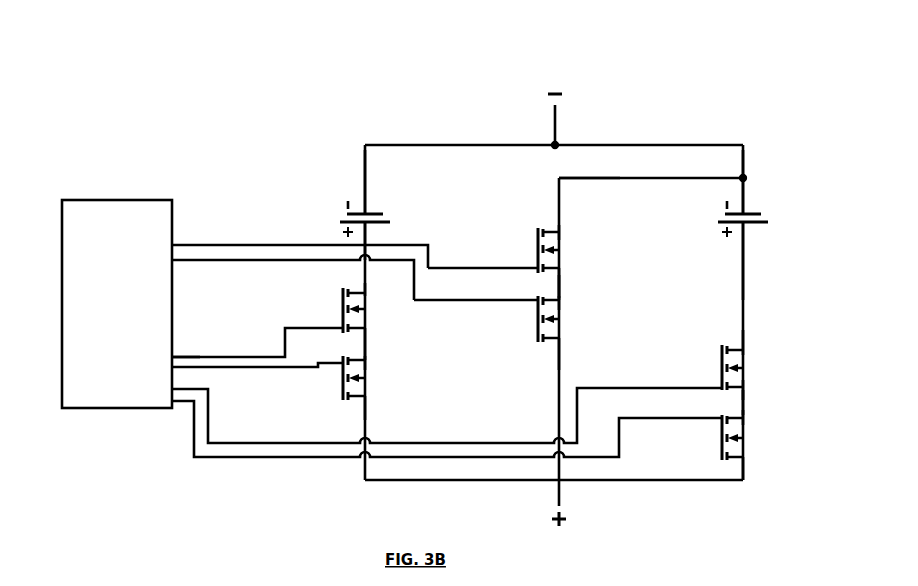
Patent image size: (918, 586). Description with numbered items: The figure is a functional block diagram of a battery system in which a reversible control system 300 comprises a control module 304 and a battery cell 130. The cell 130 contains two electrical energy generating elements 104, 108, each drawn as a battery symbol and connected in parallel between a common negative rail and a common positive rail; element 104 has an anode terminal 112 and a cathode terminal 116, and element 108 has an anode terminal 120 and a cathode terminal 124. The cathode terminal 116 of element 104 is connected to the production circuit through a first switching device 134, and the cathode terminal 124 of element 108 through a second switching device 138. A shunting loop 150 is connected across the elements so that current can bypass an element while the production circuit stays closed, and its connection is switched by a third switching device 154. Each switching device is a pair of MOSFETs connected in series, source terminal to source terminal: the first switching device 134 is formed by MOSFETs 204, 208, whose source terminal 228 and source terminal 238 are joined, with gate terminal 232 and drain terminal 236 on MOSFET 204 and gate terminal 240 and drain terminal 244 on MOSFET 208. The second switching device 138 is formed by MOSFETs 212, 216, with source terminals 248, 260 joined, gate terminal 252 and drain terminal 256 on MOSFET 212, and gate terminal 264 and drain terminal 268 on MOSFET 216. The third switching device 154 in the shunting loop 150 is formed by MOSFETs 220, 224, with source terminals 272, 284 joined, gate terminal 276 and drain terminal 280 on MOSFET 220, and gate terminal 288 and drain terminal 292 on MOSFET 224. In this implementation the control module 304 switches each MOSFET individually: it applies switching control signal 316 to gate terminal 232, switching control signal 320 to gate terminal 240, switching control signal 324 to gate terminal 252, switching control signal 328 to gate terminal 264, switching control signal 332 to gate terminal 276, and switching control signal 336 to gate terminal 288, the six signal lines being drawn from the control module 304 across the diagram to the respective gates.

The reversible control system 300 is at (128, 73).
The control module 304 is at (113, 200).
The cell 130 is at (310, 125).
The electrical energy generating element 104 is at (316, 216).
The electrical energy generating element 108 is at (790, 216).
The anode terminal 112 is at (362, 192).
The cathode terminal 116 is at (358, 237).
The anode terminal 120 is at (745, 196).
The cathode terminal 124 is at (745, 243).
The first switching device 134 is at (248, 357).
The second switching device 138 is at (800, 401).
The shunting loop 150 is at (592, 179).
The third switching device 154 is at (584, 285).
The MOSFET 204 is at (342, 311).
The MOSFET 208 is at (334, 398).
The MOSFET 212 is at (723, 354).
The MOSFET 216 is at (721, 470).
The MOSFET 220 is at (544, 238).
The MOSFET 224 is at (527, 322).
The source terminal 228 is at (368, 333).
The gate terminal 232 is at (328, 328).
The drain terminal 236 is at (368, 288).
The source terminal 238 is at (368, 360).
The gate terminal 240 is at (330, 366).
The drain terminal 244 is at (368, 408).
The source terminal 248 is at (746, 388).
The gate terminal 252 is at (720, 387).
The drain terminal 256 is at (746, 348).
The source terminal 260 is at (746, 418).
The gate terminal 264 is at (719, 421).
The drain terminal 268 is at (746, 482).
The source terminal 272 is at (563, 269).
The gate terminal 276 is at (512, 268).
The drain terminal 280 is at (565, 232).
The source terminal 284 is at (563, 301).
The gate terminal 288 is at (510, 300).
The drain terminal 292 is at (563, 338).
The switching control signal 316 is at (193, 355).
The switching control signal 320 is at (218, 367).
The switching control signal 324 is at (232, 443).
The switching control signal 328 is at (210, 458).
The switching control signal 332 is at (193, 245).
The switching control signal 336 is at (222, 260).